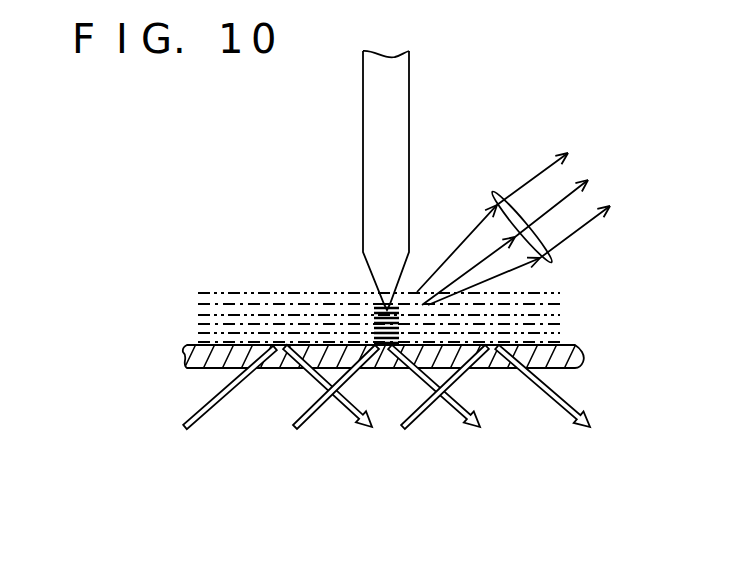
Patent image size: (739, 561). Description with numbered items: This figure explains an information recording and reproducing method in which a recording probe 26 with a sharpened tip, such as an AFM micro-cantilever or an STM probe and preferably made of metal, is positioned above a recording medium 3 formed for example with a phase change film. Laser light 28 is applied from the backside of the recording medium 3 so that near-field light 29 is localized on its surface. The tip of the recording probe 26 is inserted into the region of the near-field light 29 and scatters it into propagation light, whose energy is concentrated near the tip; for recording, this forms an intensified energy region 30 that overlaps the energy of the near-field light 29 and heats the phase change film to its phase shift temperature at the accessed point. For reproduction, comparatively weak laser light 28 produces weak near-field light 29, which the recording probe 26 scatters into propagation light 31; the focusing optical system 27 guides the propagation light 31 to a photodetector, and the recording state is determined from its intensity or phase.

The recording medium 3 is at (187, 369).
The recording probe 26 is at (367, 138).
The focusing optical system 27 is at (493, 192).
The laser light 28 is at (215, 405).
The near-field light 29 is at (177, 285).
The intensified energy region 30 is at (377, 302).
The propagation light 31 is at (445, 257).